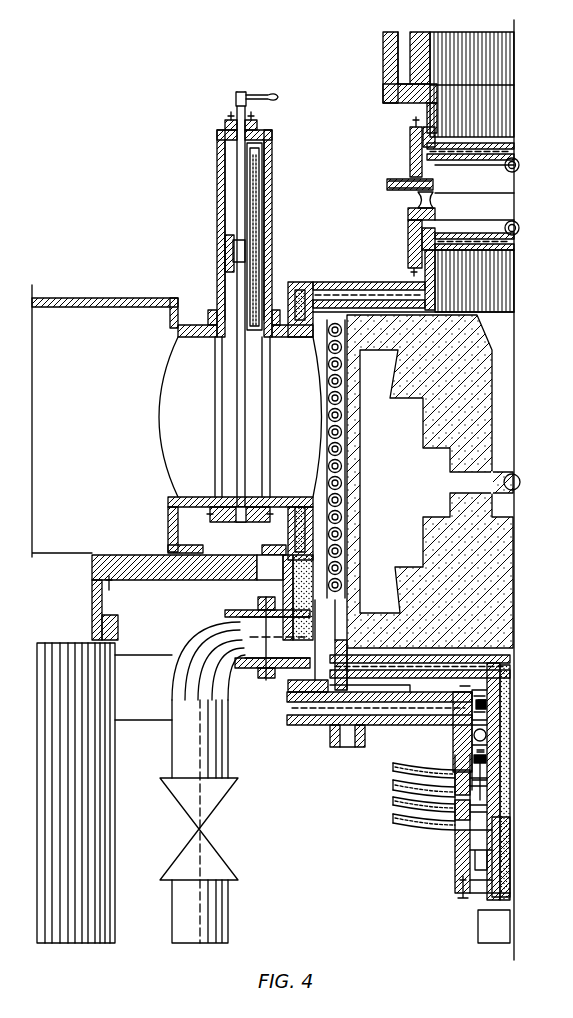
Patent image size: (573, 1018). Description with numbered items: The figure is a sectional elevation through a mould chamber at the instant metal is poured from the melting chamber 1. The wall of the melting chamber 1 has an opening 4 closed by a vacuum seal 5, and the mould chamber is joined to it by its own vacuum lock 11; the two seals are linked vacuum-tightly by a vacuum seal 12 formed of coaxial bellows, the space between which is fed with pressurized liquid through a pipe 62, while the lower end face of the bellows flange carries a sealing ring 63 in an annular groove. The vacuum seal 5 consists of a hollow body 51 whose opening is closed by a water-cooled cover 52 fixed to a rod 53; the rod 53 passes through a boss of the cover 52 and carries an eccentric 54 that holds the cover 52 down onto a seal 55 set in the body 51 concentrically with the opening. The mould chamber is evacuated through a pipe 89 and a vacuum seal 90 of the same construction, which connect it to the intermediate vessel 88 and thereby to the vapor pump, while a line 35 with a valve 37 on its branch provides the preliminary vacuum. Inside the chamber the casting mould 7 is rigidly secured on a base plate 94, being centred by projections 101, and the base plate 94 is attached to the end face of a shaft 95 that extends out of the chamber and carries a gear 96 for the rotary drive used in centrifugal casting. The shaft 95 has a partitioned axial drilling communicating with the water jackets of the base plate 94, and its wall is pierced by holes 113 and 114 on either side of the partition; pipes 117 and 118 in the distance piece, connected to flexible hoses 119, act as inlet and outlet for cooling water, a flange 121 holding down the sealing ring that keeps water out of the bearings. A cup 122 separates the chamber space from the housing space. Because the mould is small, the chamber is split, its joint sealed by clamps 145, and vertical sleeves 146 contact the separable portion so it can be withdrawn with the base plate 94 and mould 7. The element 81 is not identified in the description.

The melting chamber 1 is at (383, 50).
The opening 4 is at (468, 96).
The vacuum seal 5 is at (408, 147).
The hollow body 51 is at (410, 157).
The eccentric 54 is at (519, 165).
The pipe 62 is at (387, 183).
The vacuum seal 12 is at (415, 200).
The sealing ring 63 is at (408, 226).
The vacuum lock 11 is at (405, 248).
The casting mould 7 is at (453, 318).
The vacuum seal 90 is at (274, 225).
The water-cooled cover 52 is at (258, 152).
The rod 53 is at (236, 118).
The intermediate vessel 88 is at (102, 308).
The pipe 89 is at (290, 341).
The seal 55 is at (246, 506).
The lower housing 81 is at (262, 550).
The line 35 is at (222, 760).
The valve 37 is at (220, 866).
The projections 101 is at (343, 630).
The base plate 94 is at (437, 655).
The clamps 145 is at (296, 712).
The sleeves 146 is at (338, 748).
The cup 122 is at (500, 702).
The flange 121 is at (500, 752).
The pipe 117 is at (452, 770).
The hole 113 is at (498, 780).
The hole 114 is at (498, 805).
The flexible hoses 119 is at (400, 810).
The pipe 118 is at (452, 812).
The shaft 95 is at (508, 900).
The gear 96 is at (478, 926).